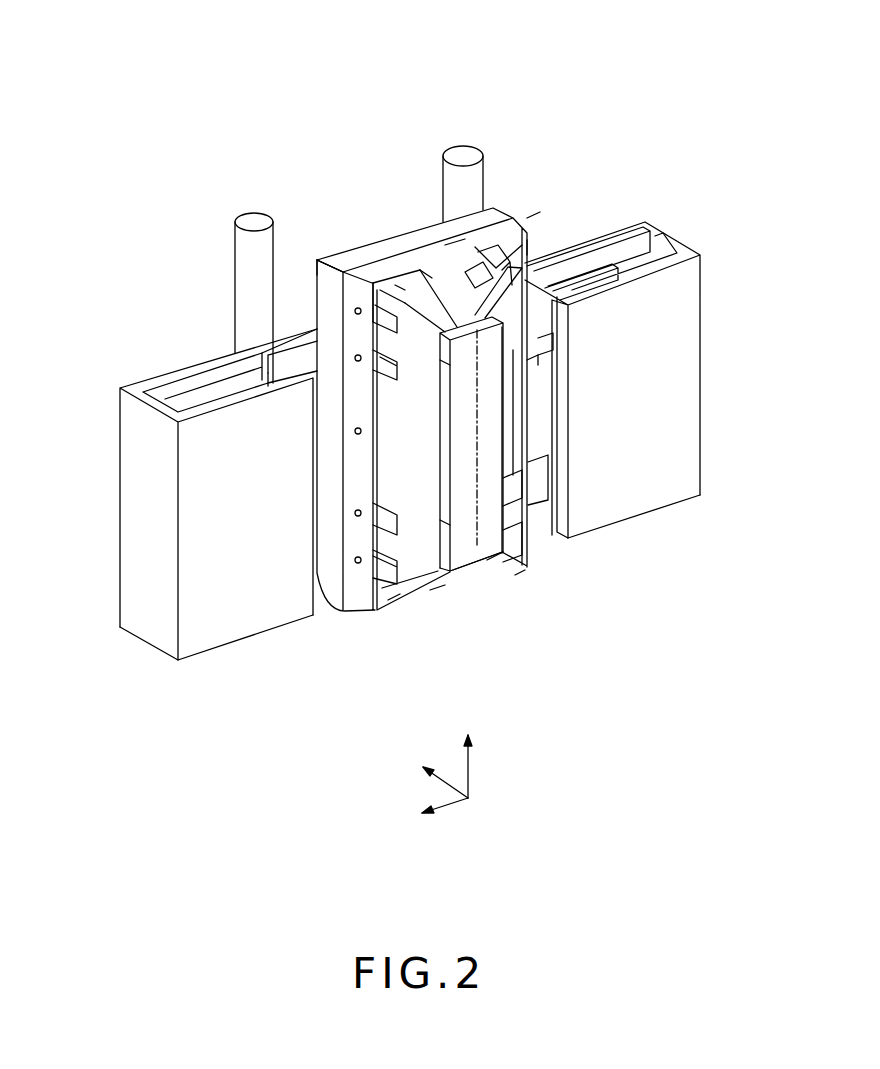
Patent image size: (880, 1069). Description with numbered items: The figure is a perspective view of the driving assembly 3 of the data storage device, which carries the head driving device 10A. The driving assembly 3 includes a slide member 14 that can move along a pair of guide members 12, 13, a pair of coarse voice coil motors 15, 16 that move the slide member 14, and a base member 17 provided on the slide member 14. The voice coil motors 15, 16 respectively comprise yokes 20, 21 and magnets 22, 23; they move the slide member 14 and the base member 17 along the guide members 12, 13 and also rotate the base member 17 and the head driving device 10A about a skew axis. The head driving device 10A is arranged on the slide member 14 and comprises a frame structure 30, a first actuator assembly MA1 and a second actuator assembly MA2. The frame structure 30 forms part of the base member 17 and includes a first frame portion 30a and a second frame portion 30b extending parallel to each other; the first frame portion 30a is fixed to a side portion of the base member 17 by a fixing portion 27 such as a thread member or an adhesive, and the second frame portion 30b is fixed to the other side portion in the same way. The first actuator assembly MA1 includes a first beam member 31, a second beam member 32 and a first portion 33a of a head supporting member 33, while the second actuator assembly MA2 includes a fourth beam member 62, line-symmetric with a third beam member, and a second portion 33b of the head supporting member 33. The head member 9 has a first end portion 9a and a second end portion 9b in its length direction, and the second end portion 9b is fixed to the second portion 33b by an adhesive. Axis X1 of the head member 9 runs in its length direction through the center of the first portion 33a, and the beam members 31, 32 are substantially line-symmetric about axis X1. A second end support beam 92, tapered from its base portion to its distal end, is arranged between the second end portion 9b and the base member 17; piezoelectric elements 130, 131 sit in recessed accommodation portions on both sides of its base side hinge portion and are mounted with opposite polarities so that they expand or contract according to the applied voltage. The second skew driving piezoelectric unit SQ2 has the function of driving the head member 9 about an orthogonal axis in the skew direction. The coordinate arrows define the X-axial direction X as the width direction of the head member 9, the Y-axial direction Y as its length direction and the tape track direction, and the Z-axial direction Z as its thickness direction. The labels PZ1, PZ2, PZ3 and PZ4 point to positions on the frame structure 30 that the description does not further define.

The driving assembly 3 is at (407, 102).
The head member 9 is at (458, 427).
The first end portion 9a is at (463, 562).
The second end portion 9b is at (500, 360).
The head driving device 10A is at (536, 213).
The guide member 12 is at (233, 247).
The guide member 13 is at (484, 163).
The slide member 14 is at (290, 335).
The coarse voice coil motor 15 is at (268, 647).
The coarse voice coil motor 16 is at (638, 528).
The base member 17 is at (333, 256).
The yoke 20 is at (143, 550).
The yoke 21 is at (686, 403).
The magnet 22 is at (186, 392).
The magnet 23 is at (608, 252).
The fixing portion 27 is at (355, 560).
The frame structure 30 is at (346, 609).
The first frame portion 30a is at (355, 480).
The second frame portion 30b is at (530, 448).
The first beam member 31 is at (421, 558).
The second beam member 32 is at (517, 513).
The head supporting member 33 is at (480, 547).
The first portion of head supporting member 33a is at (470, 565).
The second portion of head supporting member 33b is at (457, 364).
The fourth beam member 62 is at (550, 338).
The second end support beam 92 is at (462, 300).
The piezoelectric element 130 is at (430, 288).
The piezoelectric element 131 is at (480, 280).
The second skew driving piezoelectric unit SQ2 is at (456, 246).
The first actuator assembly MA1 is at (438, 594).
The second actuator assembly MA2 is at (400, 288).
The first press zone PZ1 is at (393, 596).
The second press zone PZ2 is at (523, 575).
The third press zone PZ3 is at (317, 259).
The fourth press zone PZ4 is at (533, 244).
The axis of head member X1 is at (473, 445).
The X-axial direction X is at (445, 808).
The Y-axial direction Y is at (471, 765).
The Z-axial direction Z is at (442, 785).